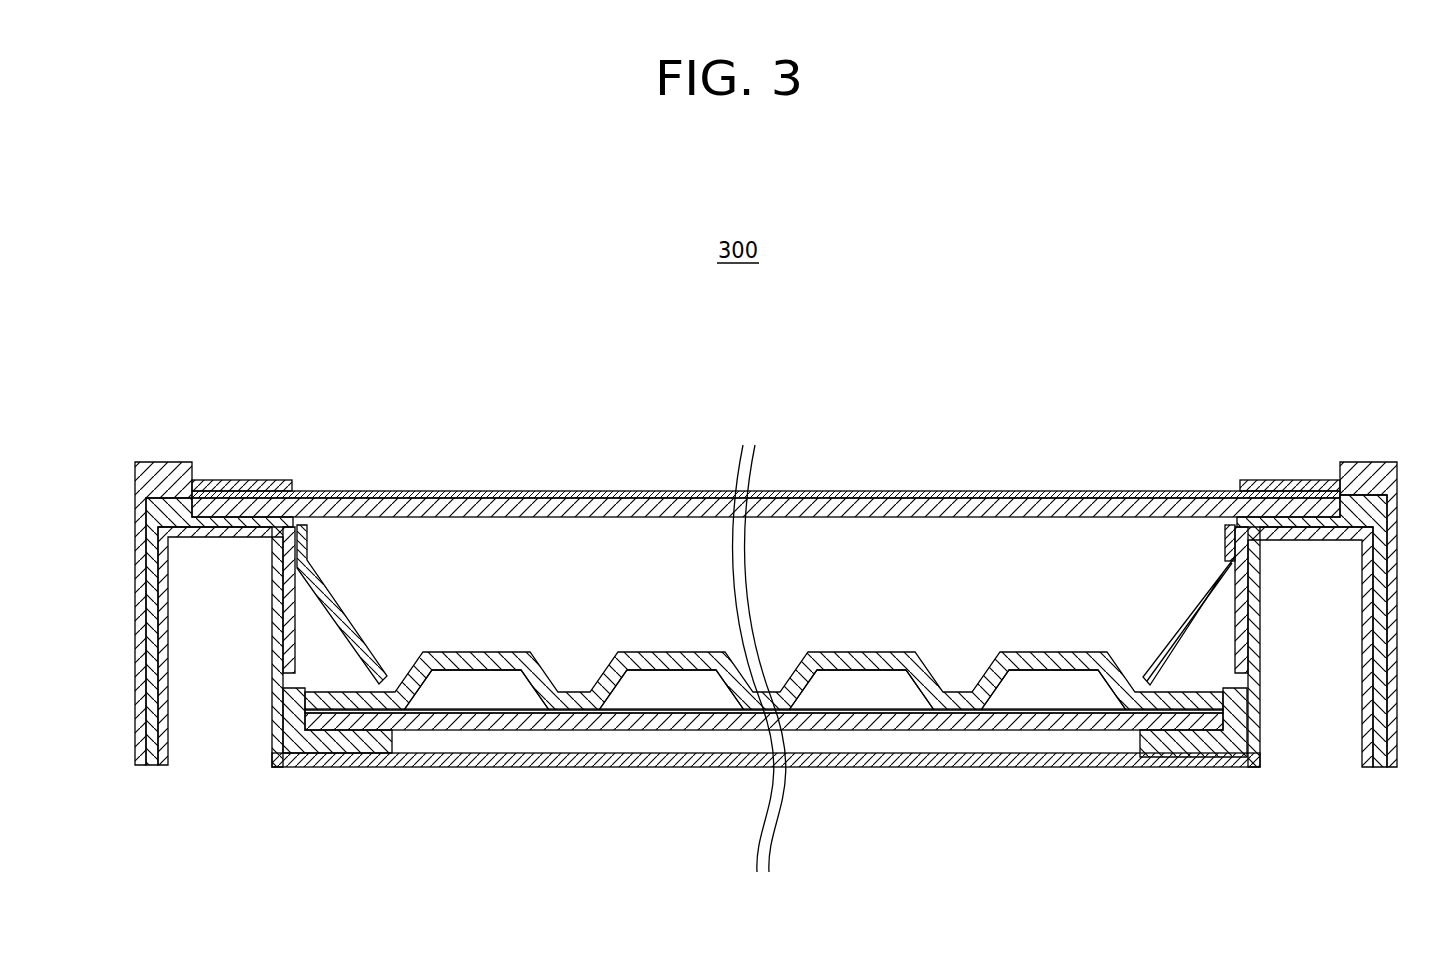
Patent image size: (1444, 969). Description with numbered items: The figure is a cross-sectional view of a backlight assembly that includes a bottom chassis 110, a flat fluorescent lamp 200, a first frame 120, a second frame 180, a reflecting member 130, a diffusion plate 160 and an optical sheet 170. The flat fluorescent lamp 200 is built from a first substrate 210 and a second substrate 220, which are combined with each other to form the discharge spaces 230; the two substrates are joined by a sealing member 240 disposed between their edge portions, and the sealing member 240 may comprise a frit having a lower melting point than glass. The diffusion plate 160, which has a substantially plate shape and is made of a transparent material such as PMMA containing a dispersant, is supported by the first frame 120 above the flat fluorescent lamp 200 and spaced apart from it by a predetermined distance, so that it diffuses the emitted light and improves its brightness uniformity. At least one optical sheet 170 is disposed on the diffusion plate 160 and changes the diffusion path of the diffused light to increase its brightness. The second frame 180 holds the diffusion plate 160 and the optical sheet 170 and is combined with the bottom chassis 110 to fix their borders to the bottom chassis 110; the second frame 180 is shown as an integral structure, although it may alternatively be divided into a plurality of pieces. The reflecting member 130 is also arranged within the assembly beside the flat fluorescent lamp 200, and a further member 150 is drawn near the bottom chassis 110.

The bottom chassis 110 is at (618, 768).
The first frame 120 is at (146, 519).
The reflecting member 130 is at (322, 589).
The mold frame 150 is at (302, 748).
The diffusion plate 160 is at (578, 508).
The optical sheet 170 is at (498, 491).
The second frame 180 is at (153, 477).
The flat fluorescent lamp 200 is at (764, 698).
The first substrate 210 is at (703, 722).
The second substrate 220 is at (628, 662).
The discharge spaces 230 is at (498, 697).
The sealing member 240 is at (362, 716).